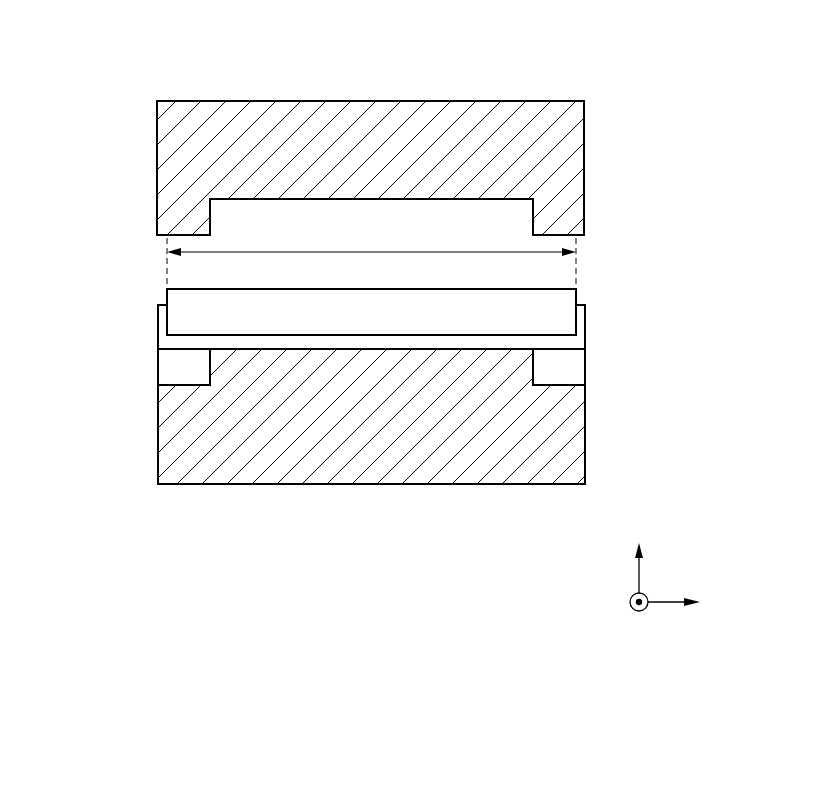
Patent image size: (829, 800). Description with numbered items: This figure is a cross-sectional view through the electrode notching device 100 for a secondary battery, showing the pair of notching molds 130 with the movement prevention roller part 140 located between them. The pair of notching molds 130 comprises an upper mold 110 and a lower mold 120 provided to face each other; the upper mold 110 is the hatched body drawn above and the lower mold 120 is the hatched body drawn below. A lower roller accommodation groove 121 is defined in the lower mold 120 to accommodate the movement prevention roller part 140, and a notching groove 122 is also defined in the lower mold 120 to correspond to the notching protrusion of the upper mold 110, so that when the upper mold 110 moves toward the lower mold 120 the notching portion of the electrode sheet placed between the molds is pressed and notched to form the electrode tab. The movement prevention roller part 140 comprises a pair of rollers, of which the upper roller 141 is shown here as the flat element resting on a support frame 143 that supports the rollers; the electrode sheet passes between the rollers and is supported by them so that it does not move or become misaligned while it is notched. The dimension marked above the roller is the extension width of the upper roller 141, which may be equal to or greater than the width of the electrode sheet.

The electrode notching device 100 is at (537, 37).
The upper mold 110 is at (598, 180).
The lower mold 120 is at (598, 398).
The lower roller accommodation groove 121 is at (162, 238).
The notching groove 122 is at (193, 367).
The notching molds 130 is at (710, 193).
The movement prevention roller part 140 is at (151, 327).
The upper roller 141 is at (313, 325).
The support frame 143 is at (158, 340).